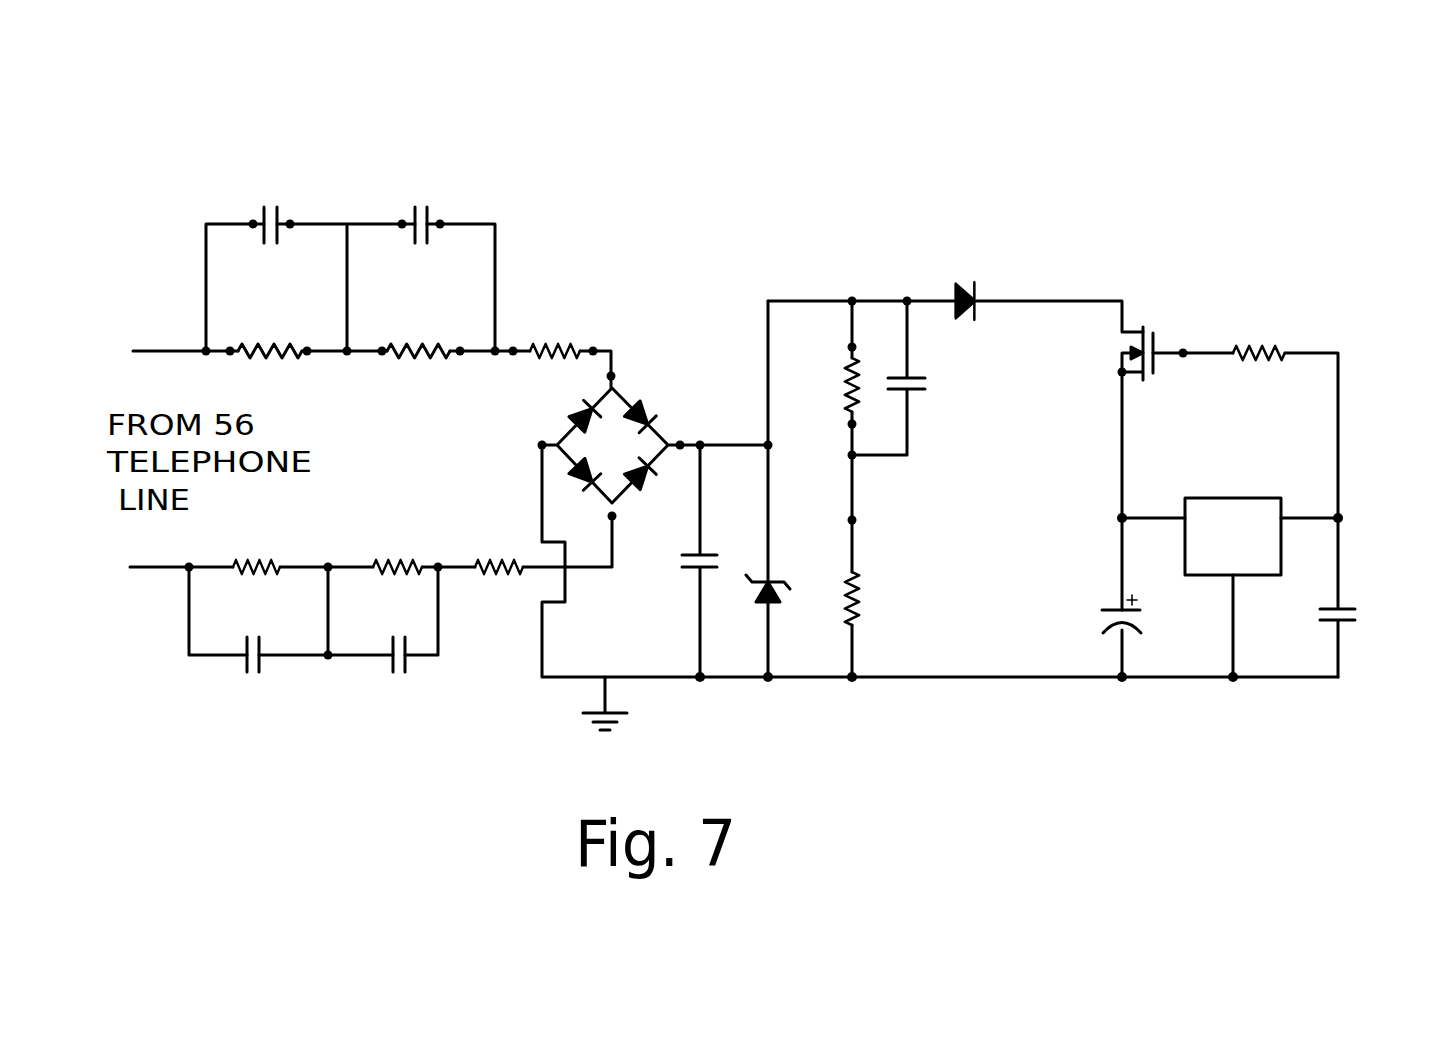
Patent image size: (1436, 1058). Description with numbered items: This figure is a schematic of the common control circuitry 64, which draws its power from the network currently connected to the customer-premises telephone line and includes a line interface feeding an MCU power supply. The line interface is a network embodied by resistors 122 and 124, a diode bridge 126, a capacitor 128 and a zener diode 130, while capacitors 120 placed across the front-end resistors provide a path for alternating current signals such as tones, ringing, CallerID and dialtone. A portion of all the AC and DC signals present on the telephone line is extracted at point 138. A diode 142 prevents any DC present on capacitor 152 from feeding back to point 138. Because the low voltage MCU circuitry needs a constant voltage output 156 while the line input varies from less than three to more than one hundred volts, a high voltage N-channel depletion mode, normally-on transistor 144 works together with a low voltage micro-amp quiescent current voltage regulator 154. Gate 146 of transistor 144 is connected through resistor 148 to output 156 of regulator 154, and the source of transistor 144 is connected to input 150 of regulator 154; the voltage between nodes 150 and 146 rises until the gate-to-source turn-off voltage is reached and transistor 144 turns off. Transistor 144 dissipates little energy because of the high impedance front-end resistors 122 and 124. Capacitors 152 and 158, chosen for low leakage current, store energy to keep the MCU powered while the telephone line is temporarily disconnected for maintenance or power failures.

The common control circuitry 64 is at (241, 107).
The capacitors 120 is at (273, 213).
The resistors 122 is at (258, 360).
The resistors 124 is at (540, 352).
The diode bridge 126 is at (641, 398).
The capacitor 128 is at (682, 556).
The zener diode 130 is at (786, 601).
The point 138 is at (856, 520).
The diode 142 is at (965, 290).
The transistor 144 is at (1143, 327).
The gate 146 is at (1183, 350).
The resistor 148 is at (1269, 341).
The input 150 is at (1120, 490).
The capacitor 152 is at (1102, 610).
The voltage regulator 154 is at (1205, 498).
The output 156 is at (1353, 518).
The capacitor 158 is at (1357, 612).